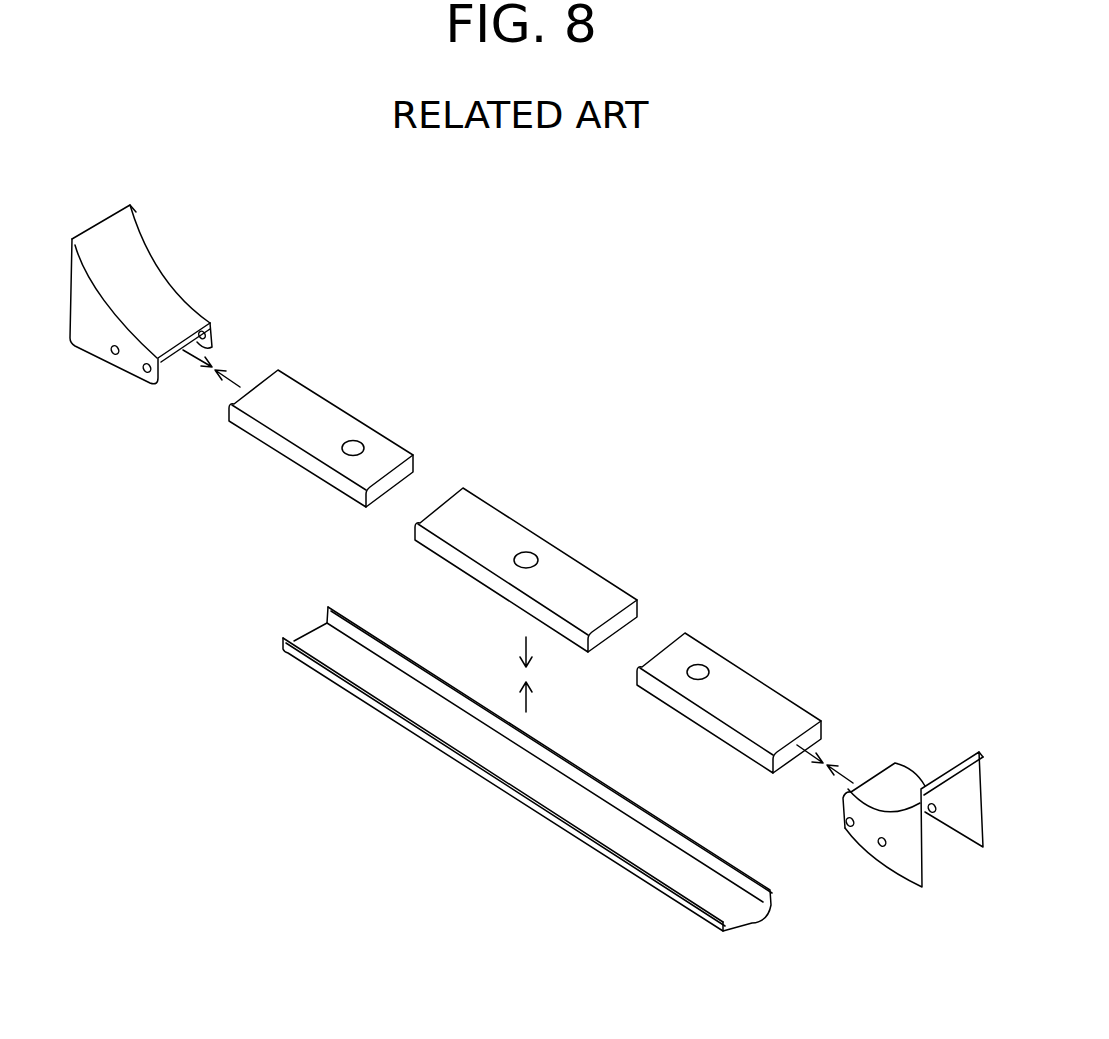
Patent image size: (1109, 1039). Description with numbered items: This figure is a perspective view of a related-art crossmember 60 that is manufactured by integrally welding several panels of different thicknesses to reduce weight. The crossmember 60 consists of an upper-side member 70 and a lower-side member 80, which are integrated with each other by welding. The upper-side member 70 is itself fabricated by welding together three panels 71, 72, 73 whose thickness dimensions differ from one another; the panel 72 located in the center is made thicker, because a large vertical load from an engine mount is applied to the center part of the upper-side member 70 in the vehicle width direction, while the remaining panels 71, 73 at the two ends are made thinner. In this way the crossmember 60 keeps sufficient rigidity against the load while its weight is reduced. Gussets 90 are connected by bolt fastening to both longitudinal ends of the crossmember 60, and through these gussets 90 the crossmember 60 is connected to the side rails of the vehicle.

The crossmember 60 is at (388, 377).
The upper-side member 70 is at (513, 379).
The panel 71 is at (385, 437).
The panel 72 is at (543, 540).
The panel 73 is at (702, 643).
The lower-side member 80 is at (483, 777).
The gusset 90 is at (162, 268).